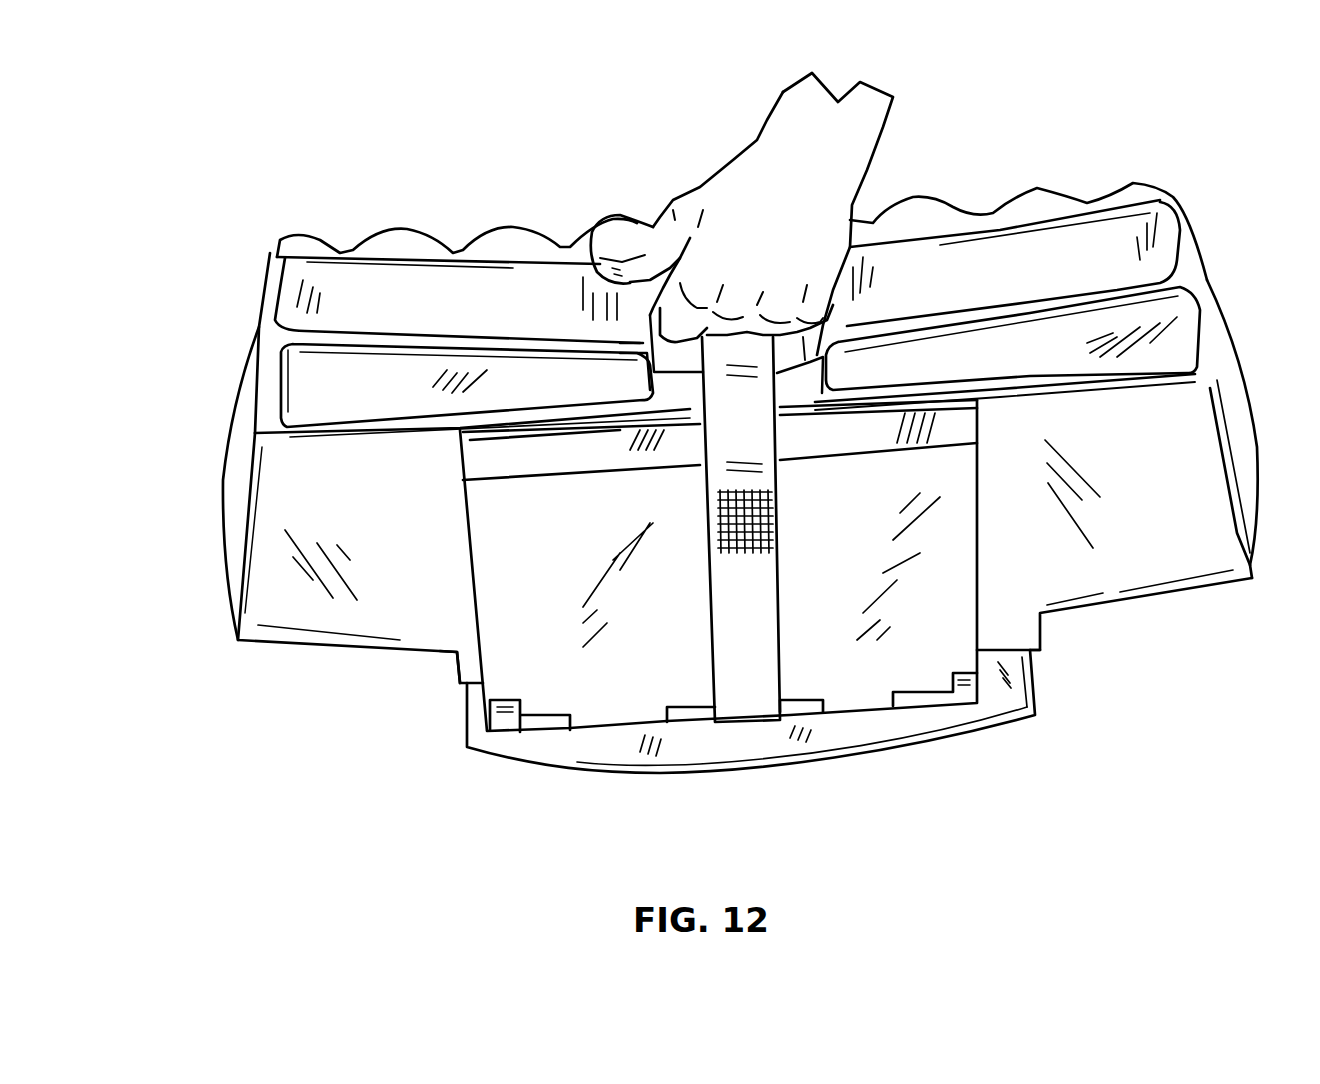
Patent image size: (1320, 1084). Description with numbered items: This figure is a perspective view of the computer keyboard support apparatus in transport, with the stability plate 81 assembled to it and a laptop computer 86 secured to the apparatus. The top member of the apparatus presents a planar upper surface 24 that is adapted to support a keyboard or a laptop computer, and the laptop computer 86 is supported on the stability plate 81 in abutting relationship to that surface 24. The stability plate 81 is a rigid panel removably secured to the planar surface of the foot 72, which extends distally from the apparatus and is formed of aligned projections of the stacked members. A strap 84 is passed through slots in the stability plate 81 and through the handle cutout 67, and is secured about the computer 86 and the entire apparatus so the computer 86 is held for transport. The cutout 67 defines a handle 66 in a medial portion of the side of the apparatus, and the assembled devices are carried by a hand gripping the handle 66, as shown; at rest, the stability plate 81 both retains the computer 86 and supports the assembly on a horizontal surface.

The planar upper surface 24 is at (1137, 537).
The handle 66 is at (603, 267).
The cutout 67 is at (830, 368).
The foot 72 is at (455, 670).
The stability plate 81 is at (565, 767).
The strap 84 is at (763, 605).
The laptop computer 86 is at (570, 655).